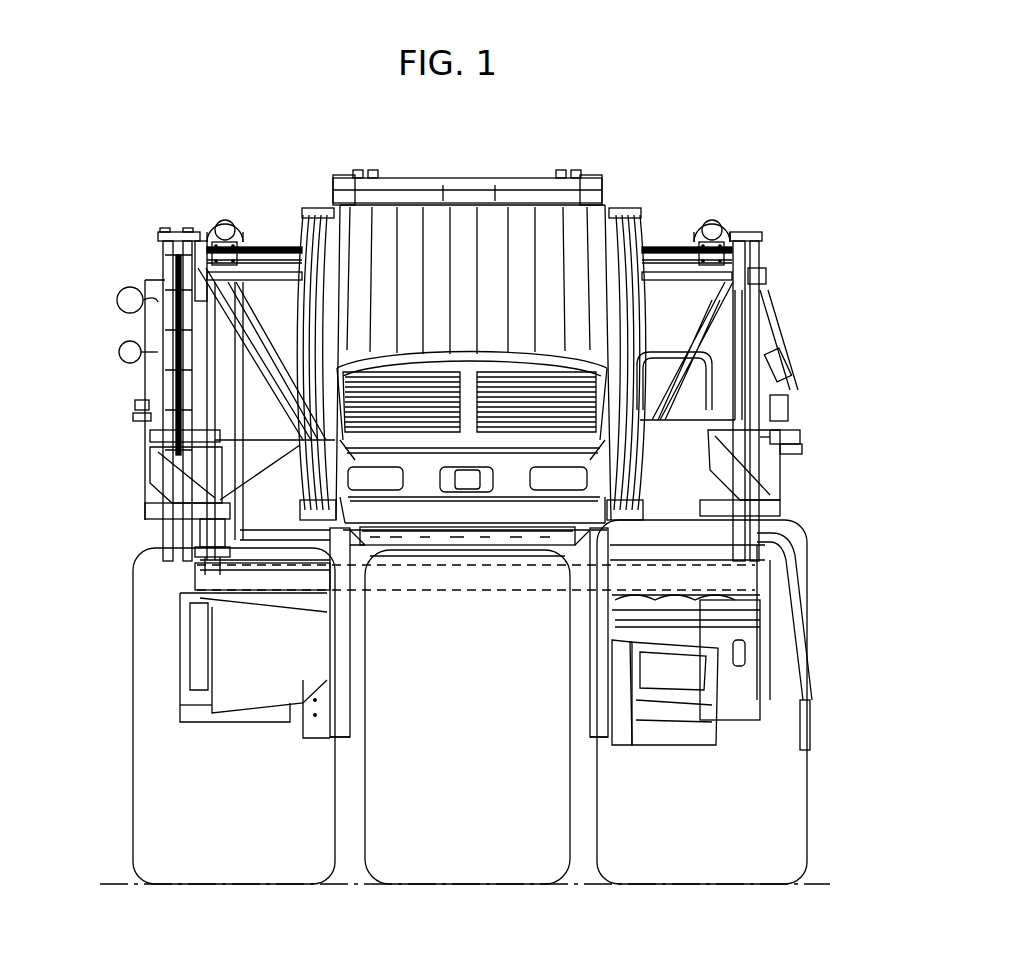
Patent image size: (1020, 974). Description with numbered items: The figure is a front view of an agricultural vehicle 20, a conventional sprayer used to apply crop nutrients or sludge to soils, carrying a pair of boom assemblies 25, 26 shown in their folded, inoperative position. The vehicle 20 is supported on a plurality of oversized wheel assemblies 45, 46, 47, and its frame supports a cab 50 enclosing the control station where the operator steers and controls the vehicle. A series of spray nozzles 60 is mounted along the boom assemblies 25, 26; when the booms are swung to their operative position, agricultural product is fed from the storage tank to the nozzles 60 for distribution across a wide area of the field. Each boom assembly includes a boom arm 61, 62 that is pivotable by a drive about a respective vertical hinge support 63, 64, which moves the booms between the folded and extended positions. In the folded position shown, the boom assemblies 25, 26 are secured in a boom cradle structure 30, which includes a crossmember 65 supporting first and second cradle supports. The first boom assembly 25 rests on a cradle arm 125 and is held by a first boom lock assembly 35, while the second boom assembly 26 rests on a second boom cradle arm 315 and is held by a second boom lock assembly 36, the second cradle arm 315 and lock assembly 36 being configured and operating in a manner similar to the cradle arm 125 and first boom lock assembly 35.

The vehicle 20 is at (648, 110).
The cab 50 is at (626, 193).
The wheel assembly 45 is at (570, 884).
The wheel assembly 46 is at (133, 757).
The wheel assembly 47 is at (803, 812).
The vertical hinge support 63 is at (196, 230).
The vertical hinge support 64 is at (760, 231).
The boom lock assembly 35 is at (203, 420).
The cradle arm 125 is at (217, 362).
The boom cradle arm 315 is at (722, 345).
The boom lock assembly 36 is at (740, 404).
The nozzles 60 is at (133, 396).
The boom arm 61 is at (158, 480).
The boom assembly 25 is at (145, 492).
The boom assembly 26 is at (794, 473).
The boom arm 62 is at (796, 440).
The crossmember 65 is at (265, 590).
The boom cradle structure 30 is at (304, 594).